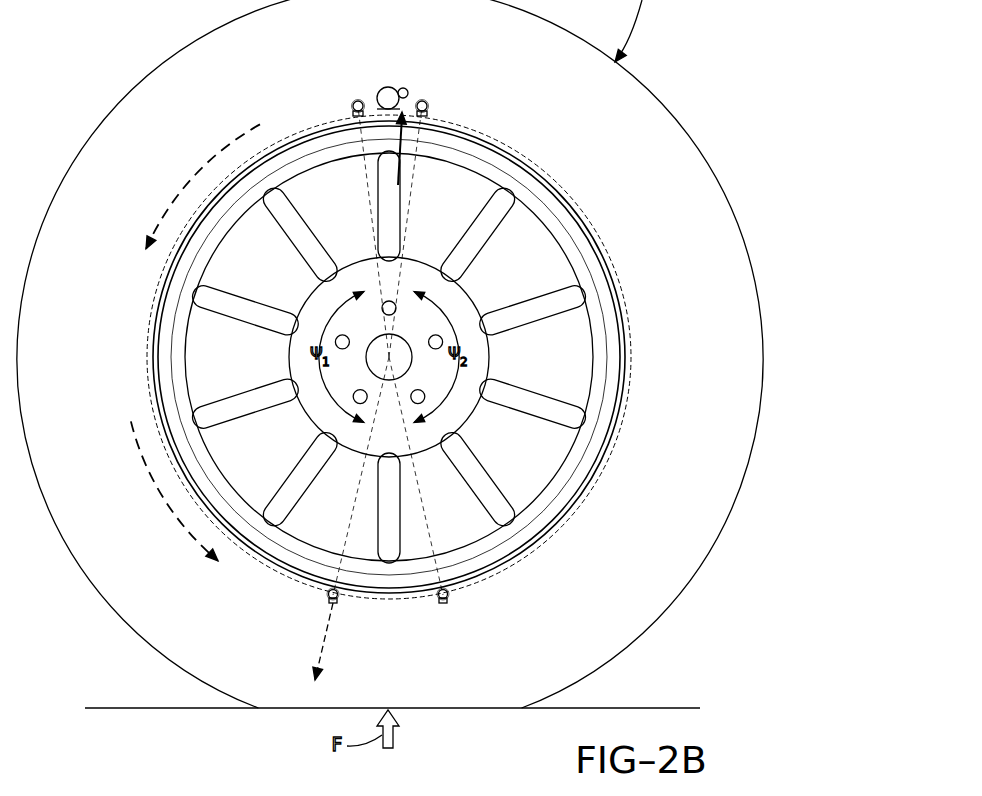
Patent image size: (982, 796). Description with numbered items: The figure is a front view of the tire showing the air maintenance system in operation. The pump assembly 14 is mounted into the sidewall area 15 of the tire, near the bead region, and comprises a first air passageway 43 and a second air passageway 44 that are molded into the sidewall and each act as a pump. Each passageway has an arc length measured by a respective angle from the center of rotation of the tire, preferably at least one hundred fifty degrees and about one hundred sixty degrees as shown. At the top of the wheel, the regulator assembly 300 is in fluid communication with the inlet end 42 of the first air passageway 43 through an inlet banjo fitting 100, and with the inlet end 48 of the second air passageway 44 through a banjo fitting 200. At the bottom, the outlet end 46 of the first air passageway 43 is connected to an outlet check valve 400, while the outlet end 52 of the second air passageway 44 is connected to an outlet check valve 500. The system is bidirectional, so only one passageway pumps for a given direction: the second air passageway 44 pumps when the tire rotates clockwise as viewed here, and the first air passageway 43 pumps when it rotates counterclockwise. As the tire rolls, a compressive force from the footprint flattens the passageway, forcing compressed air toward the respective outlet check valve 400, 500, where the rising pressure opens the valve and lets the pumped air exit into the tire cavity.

The pump assembly 14 is at (147, 338).
The sidewall area 15 is at (666, 268).
The inlet end 42 is at (431, 109).
The first air passageway 43 is at (566, 185).
The second air passageway 44 is at (153, 293).
The outlet end 46 is at (455, 588).
The inlet end 48 is at (345, 107).
The outlet end 52 is at (322, 590).
The inlet banjo fitting 100 is at (432, 93).
The banjo fitting 200 is at (348, 94).
The regulator assembly 300 is at (378, 84).
The outlet check valve 400 is at (343, 605).
The outlet check valve 500 is at (437, 607).